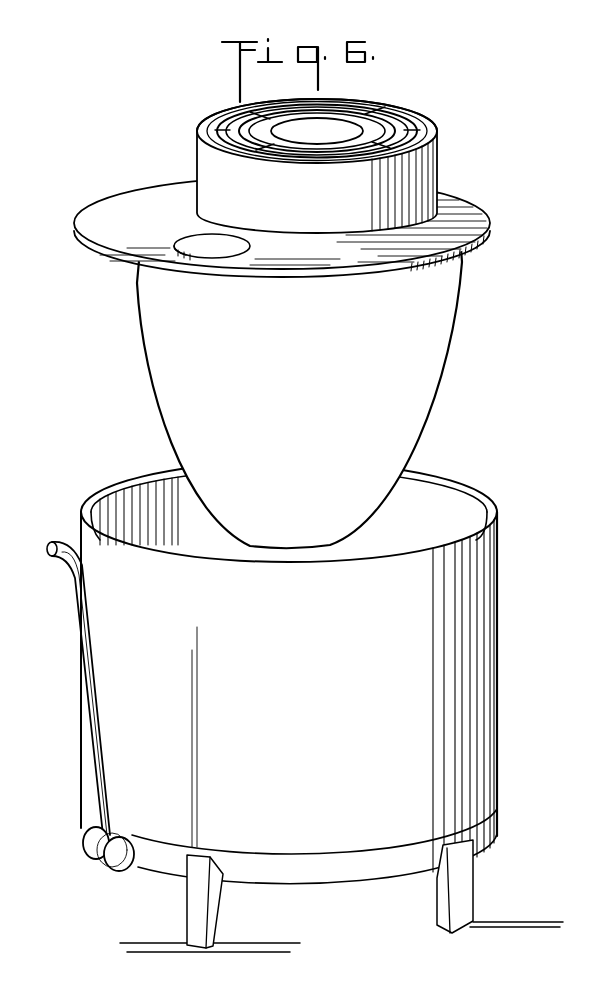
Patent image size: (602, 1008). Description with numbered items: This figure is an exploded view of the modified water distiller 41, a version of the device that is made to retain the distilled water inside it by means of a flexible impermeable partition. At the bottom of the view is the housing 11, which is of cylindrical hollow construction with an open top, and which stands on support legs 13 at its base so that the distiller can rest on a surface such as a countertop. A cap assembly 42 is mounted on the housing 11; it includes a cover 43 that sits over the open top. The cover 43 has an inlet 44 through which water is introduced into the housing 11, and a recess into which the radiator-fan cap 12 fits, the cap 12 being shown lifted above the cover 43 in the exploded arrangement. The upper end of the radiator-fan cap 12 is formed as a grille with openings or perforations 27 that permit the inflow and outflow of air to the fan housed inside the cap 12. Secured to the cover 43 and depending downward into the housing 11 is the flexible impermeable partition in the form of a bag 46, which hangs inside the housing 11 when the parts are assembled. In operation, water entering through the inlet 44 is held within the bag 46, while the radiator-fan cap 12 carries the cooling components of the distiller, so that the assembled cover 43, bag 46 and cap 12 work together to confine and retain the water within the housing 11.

The housing 11 is at (305, 707).
The radiator-fan cap 12 is at (307, 162).
The support legs 13 is at (447, 907).
The openings or perforations 27 is at (403, 115).
The water distiller 41 is at (305, 522).
The cap assembly 42 is at (494, 244).
The cover 43 is at (310, 214).
The inlet 44 is at (188, 244).
The bag 46 is at (433, 348).